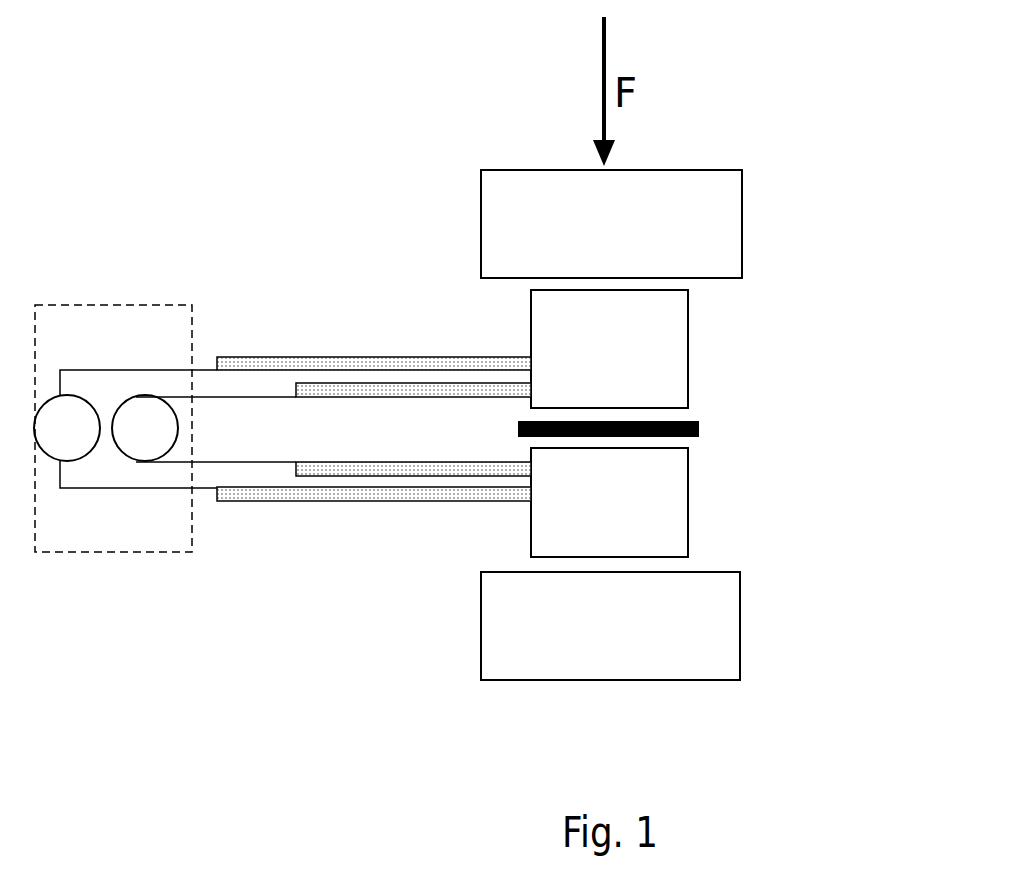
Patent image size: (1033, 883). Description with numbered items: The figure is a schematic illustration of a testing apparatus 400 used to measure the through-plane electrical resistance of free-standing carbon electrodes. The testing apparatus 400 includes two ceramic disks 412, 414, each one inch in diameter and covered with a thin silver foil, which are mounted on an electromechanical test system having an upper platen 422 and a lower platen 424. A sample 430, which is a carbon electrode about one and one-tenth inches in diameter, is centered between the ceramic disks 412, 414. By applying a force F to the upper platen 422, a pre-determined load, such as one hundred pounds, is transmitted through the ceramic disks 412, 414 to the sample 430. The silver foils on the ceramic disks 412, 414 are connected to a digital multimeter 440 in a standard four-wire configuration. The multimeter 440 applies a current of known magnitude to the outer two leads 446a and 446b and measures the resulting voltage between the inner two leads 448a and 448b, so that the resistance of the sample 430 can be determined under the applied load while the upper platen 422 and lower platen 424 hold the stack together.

The testing apparatus 400 is at (232, 132).
The digital multimeter 440 is at (118, 303).
The outer lead 446a is at (400, 362).
The outer lead 446b is at (413, 497).
The inner lead 448a is at (362, 387).
The inner lead 448b is at (357, 463).
The upper platen 422 is at (740, 210).
The ceramic disk 412 is at (672, 355).
The sample 430 is at (701, 425).
The ceramic disk 414 is at (672, 531).
The lower platen 424 is at (740, 638).